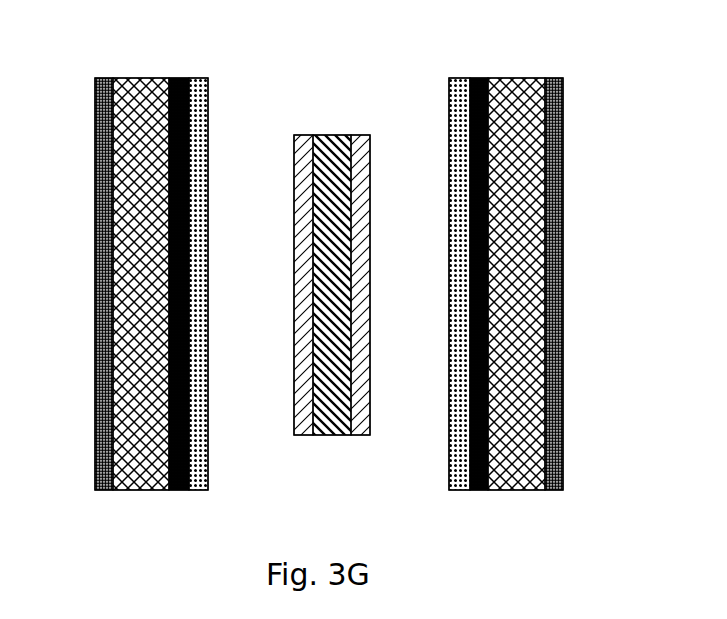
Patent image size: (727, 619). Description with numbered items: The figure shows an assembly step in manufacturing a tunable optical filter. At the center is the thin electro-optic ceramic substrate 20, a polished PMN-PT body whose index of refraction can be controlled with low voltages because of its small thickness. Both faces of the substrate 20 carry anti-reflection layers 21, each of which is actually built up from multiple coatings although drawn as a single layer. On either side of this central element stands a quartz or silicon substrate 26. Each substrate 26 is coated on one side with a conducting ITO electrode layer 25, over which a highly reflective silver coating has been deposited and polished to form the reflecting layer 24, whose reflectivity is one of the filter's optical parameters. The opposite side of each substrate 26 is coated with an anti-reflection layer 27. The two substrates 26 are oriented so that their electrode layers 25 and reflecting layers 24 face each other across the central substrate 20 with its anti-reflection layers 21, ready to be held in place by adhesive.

The electro-optic ceramic substrate 20 is at (325, 407).
The anti-reflection layers 21 is at (350, 137).
The reflecting layer 24 is at (185, 470).
The electrode layer 25 is at (165, 80).
The substrate 26 is at (142, 460).
The anti-reflection layer 27 is at (95, 88).